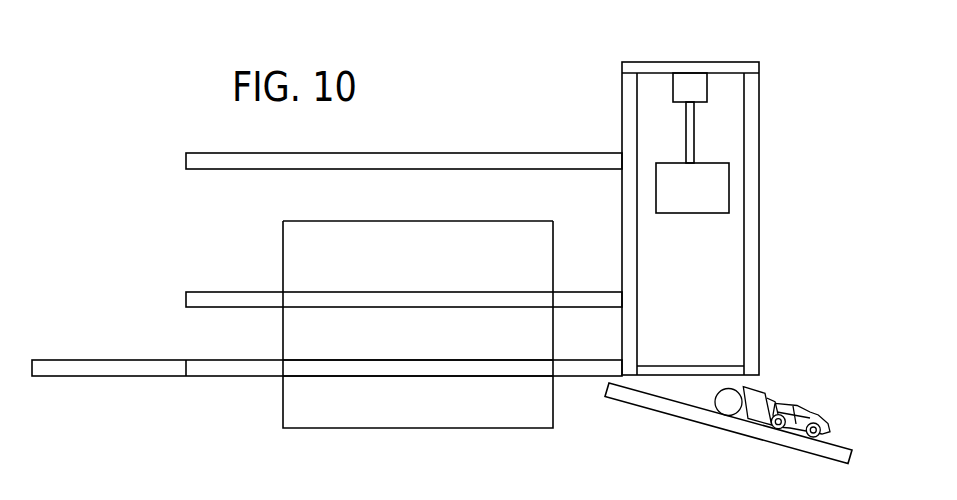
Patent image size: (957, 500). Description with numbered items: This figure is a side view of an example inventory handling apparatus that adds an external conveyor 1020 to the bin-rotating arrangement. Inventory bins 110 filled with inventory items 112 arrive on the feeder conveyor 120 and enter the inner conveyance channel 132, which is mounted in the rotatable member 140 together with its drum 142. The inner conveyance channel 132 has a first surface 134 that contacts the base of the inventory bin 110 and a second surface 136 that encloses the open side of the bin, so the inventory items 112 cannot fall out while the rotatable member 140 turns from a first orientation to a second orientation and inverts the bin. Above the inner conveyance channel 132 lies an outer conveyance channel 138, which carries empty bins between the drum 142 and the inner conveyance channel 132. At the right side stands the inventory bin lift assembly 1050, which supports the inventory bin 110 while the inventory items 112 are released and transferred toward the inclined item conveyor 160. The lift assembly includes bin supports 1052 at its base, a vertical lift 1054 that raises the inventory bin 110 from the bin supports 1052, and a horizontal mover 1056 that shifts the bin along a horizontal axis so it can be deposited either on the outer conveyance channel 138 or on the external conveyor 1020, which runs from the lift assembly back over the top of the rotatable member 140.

The external conveyor 1020 is at (433, 153).
The feeder conveyor 120 is at (117, 377).
The inner conveyance channel 132 is at (557, 308).
The first surface 134 is at (357, 307).
The second surface 136 is at (475, 360).
The outer conveyance channel 138 is at (557, 222).
The rotatable member 140 is at (318, 220).
The drum 142 is at (482, 223).
The inventory bin lift assembly 1050 is at (760, 67).
The bin supports 1052 is at (733, 370).
The vertical lift 1054 is at (692, 115).
The horizontal mover 1056 is at (707, 88).
The inventory bin 110 is at (710, 199).
The inventory items 112 is at (803, 407).
The item conveyor 160 is at (827, 450).